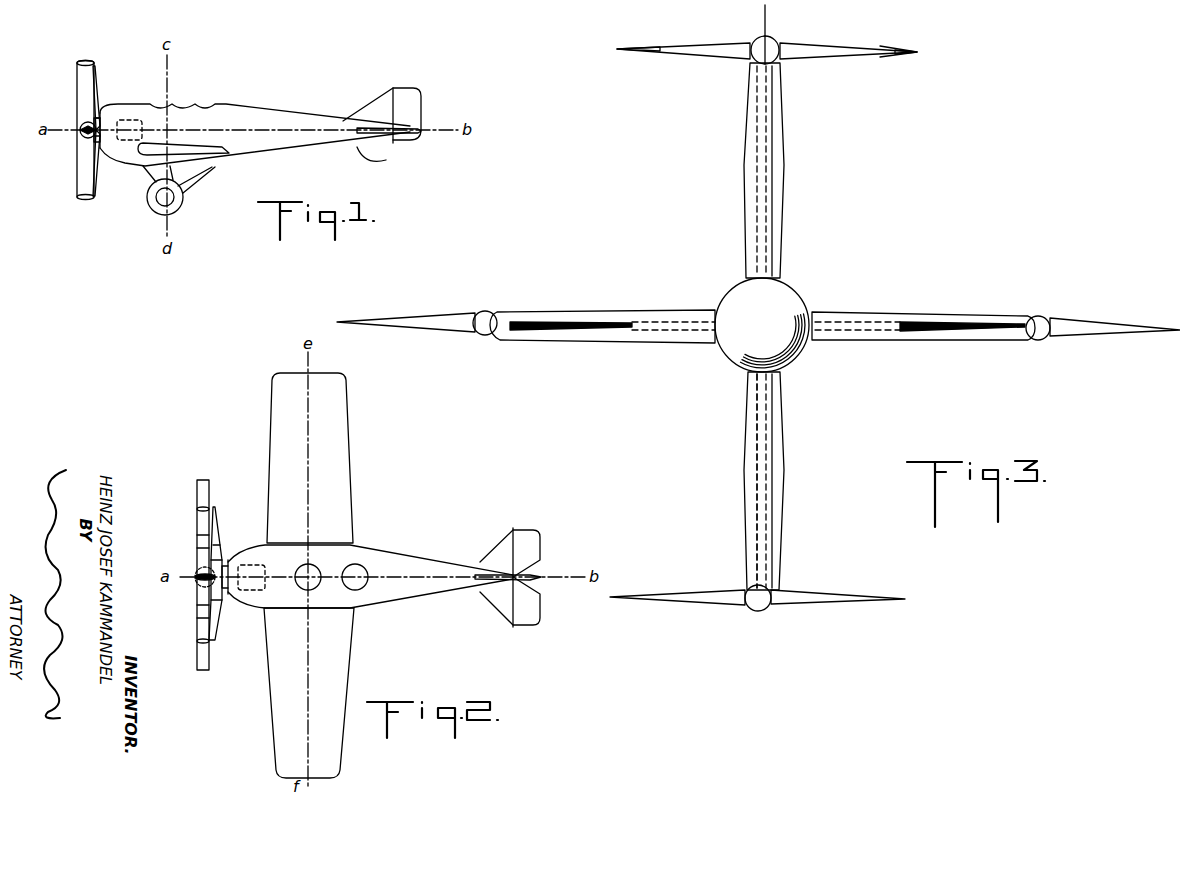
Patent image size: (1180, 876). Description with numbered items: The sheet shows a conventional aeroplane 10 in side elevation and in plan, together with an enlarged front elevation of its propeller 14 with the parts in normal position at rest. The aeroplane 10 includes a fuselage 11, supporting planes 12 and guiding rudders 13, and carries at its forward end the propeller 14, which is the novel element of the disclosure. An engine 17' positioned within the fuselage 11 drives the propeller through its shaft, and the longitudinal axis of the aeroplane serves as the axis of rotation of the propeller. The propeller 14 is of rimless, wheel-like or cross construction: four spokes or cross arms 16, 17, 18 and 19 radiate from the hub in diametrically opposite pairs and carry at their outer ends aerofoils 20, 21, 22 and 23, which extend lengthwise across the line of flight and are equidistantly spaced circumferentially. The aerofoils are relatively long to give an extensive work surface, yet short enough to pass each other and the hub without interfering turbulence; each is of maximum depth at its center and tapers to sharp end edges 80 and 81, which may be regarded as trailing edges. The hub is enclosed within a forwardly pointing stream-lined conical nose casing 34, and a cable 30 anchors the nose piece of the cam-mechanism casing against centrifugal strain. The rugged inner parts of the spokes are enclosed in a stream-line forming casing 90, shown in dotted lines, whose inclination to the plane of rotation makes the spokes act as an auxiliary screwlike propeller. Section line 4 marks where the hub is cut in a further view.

In FIG. 1, the aeroplane 10 is at (250, 96).
In FIG. 1, the fuselage 11 is at (286, 116).
In FIG. 2, the fuselage 11 is at (398, 552).
In FIG. 1, the supporting planes 12 is at (187, 150).
In FIG. 2, the supporting planes 12 is at (340, 482).
In FIG. 1, the guiding rudders 13 is at (415, 140).
In FIG. 2, the guiding rudders 13 is at (522, 572).
In FIG. 2, the propeller 14 is at (221, 524).
In FIG. 3, the propeller 14 is at (909, 43).
In FIG. 1, the spoke or cross arm 16 is at (96, 85).
In FIG. 2, the spoke or cross arm 16 is at (212, 607).
In FIG. 3, the spoke or cross arm 16 is at (778, 168).
In FIG. 2, the spoke or cross arm 17 is at (235, 539).
In FIG. 3, the spoke or cross arm 17 is at (594, 304).
In FIG. 1, the engine 17' is at (140, 113).
In FIG. 2, the engine 17' is at (264, 554).
In FIG. 1, the spoke or cross arm 18 is at (96, 162).
In FIG. 3, the spoke or cross arm 18 is at (776, 461).
In FIG. 1, the spoke or cross arm 19 is at (100, 117).
In FIG. 2, the spoke or cross arm 19 is at (219, 612).
In FIG. 3, the spoke or cross arm 19 is at (920, 315).
In FIG. 1, the aerofoil 20 is at (88, 60).
In FIG. 2, the aerofoil 20 is at (197, 592).
In FIG. 3, the aerofoil 20 is at (838, 45).
In FIG. 2, the aerofoil 21 is at (197, 490).
In FIG. 3, the aerofoil 21 is at (436, 327).
In FIG. 1, the aerofoil 22 is at (87, 199).
In FIG. 3, the aerofoil 22 is at (713, 601).
In FIG. 1, the aerofoil 23 is at (78, 137).
In FIG. 2, the aerofoil 23 is at (197, 655).
In FIG. 3, the aerofoil 23 is at (990, 325).
In FIG. 1, the cable 30 is at (77, 83).
In FIG. 2, the cable 30 is at (197, 540).
In FIG. 1, the conical nose casing 34 is at (82, 124).
In FIG. 2, the conical nose casing 34 is at (200, 570).
In FIG. 3, the conical nose casing 34 is at (735, 345).
In FIG. 3, the section line 4 is at (754, 30).
In FIG. 3, the end edge 80 is at (622, 50).
In FIG. 3, the end edge 81 is at (917, 52).
In FIG. 3, the stream-line forming shell or casing 90 is at (752, 480).